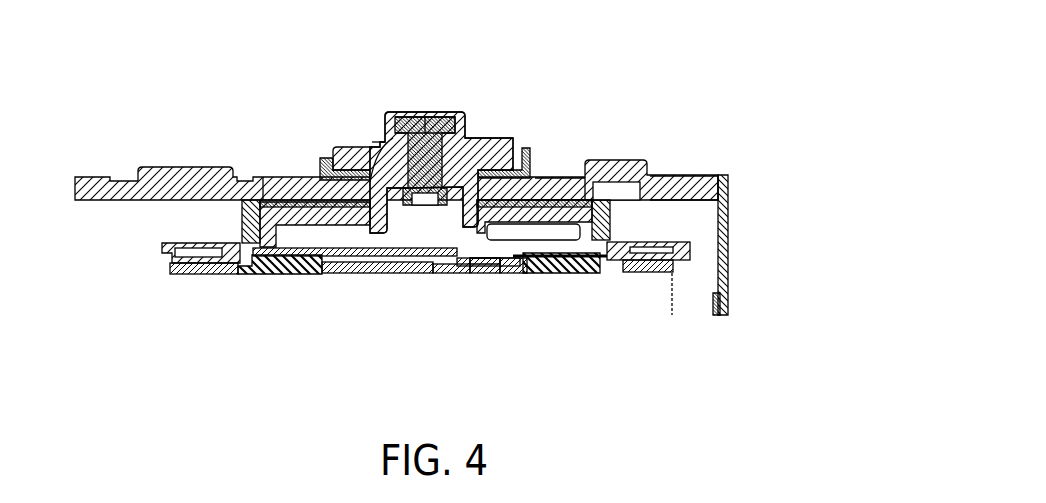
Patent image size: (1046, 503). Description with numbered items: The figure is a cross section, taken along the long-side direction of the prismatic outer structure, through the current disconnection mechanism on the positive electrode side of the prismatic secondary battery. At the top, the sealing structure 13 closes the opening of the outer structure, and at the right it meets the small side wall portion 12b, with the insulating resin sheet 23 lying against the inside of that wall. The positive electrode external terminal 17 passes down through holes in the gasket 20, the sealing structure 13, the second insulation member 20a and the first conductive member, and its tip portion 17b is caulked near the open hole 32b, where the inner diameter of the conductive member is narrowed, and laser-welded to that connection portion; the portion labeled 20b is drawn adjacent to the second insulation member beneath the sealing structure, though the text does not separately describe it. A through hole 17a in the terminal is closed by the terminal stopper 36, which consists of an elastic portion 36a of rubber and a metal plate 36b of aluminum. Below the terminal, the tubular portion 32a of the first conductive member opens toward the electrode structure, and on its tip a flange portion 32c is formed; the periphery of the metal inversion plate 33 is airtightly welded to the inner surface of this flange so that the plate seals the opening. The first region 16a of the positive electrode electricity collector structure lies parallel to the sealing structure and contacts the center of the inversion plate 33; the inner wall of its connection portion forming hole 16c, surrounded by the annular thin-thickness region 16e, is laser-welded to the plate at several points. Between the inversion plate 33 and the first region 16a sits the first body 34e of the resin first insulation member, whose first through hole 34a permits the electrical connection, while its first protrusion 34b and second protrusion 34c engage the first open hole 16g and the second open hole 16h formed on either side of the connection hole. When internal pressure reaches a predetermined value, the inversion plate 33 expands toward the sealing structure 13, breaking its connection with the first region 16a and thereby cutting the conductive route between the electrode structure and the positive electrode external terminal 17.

The small side wall portion 12b is at (728, 215).
The sealing structure 13 is at (697, 175).
The first region 16a is at (190, 273).
The connection portion forming hole 16c is at (442, 273).
The thin-thickness region 16e is at (388, 273).
The first open hole 16g is at (256, 274).
The second open hole 16h is at (620, 273).
The positive electrode external terminal 17 is at (512, 140).
The through hole 17a is at (378, 140).
The tip portion 17b is at (484, 265).
The gasket 20 is at (316, 153).
The second insulation member 20a is at (558, 197).
The bracket portion 20b is at (273, 200).
The insulating resin sheet 23 is at (728, 297).
The tubular portion 32a is at (603, 233).
The open hole 32b is at (333, 146).
The flange portion 32c is at (242, 218).
The inversion plate 33 is at (345, 274).
The first through hole 34a is at (462, 267).
The first protrusion 34b is at (307, 274).
The second protrusion 34c is at (555, 273).
The first body 34e is at (515, 272).
The terminal stopper 36 is at (424, 113).
The elastic portion 36a is at (447, 117).
The metal plate 36b is at (402, 117).